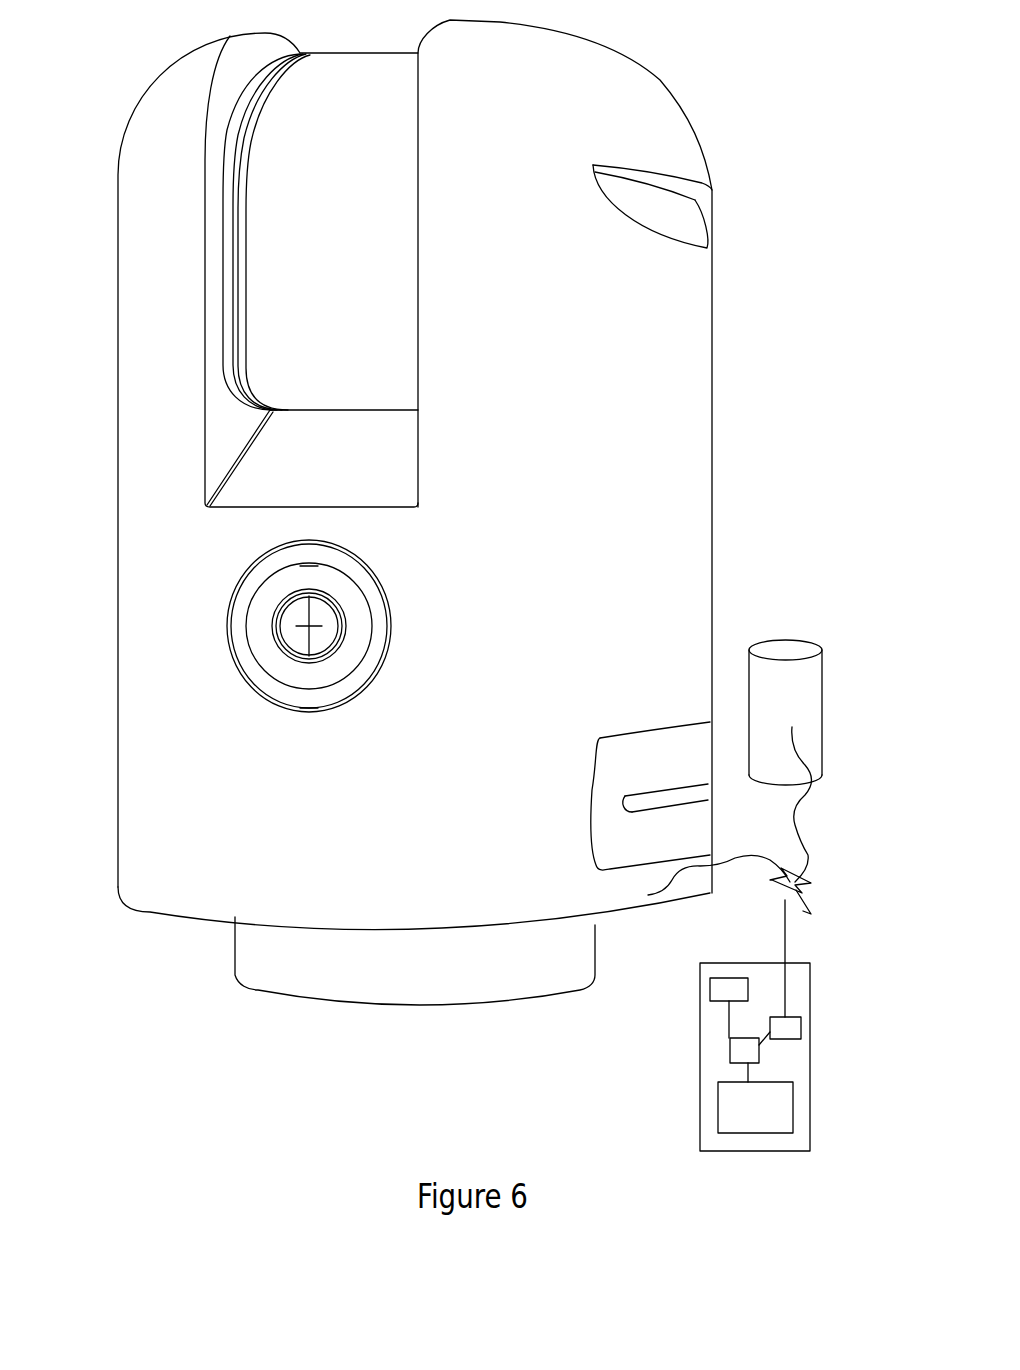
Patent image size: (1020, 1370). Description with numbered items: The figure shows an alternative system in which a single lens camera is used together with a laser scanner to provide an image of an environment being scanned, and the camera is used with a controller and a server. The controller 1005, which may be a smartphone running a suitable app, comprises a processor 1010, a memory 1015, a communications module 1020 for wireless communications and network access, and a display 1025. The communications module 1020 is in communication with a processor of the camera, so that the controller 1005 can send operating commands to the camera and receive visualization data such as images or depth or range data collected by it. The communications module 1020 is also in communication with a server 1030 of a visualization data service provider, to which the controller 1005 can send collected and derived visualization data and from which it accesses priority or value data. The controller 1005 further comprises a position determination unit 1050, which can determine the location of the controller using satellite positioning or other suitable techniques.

The controller 1005 is at (730, 1110).
The processor 1010 is at (732, 1052).
The memory 1015 is at (725, 990).
The communications module 1020 is at (797, 888).
The display 1025 is at (765, 1122).
The server 1030 is at (784, 650).
The position determination unit 1050 is at (786, 1027).